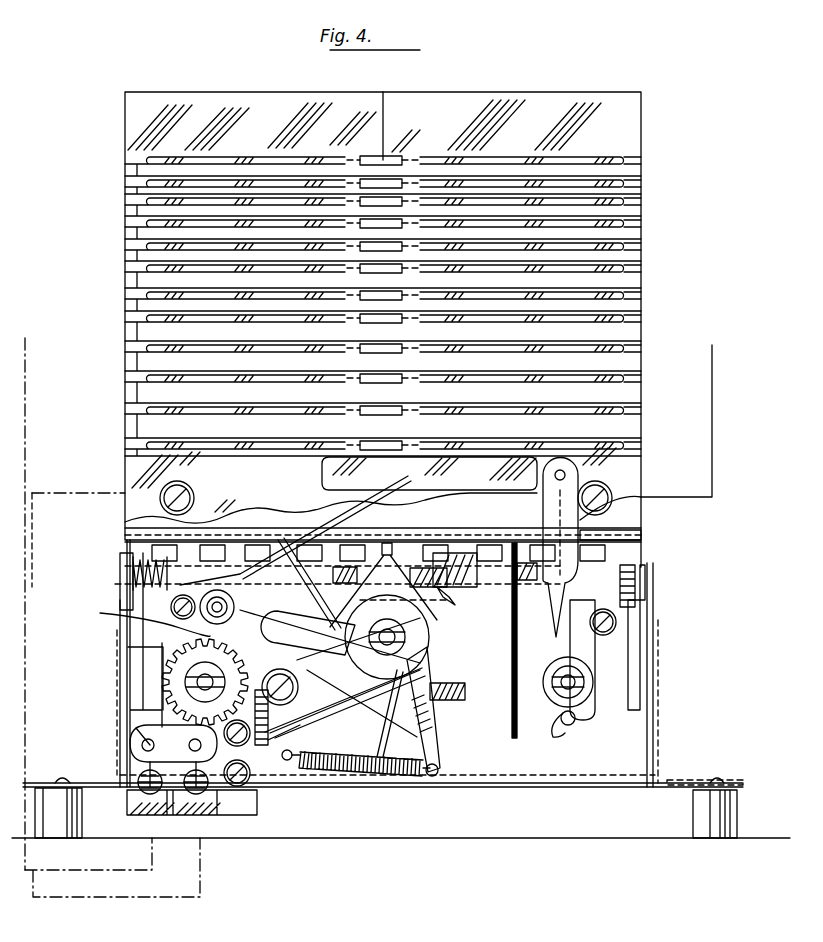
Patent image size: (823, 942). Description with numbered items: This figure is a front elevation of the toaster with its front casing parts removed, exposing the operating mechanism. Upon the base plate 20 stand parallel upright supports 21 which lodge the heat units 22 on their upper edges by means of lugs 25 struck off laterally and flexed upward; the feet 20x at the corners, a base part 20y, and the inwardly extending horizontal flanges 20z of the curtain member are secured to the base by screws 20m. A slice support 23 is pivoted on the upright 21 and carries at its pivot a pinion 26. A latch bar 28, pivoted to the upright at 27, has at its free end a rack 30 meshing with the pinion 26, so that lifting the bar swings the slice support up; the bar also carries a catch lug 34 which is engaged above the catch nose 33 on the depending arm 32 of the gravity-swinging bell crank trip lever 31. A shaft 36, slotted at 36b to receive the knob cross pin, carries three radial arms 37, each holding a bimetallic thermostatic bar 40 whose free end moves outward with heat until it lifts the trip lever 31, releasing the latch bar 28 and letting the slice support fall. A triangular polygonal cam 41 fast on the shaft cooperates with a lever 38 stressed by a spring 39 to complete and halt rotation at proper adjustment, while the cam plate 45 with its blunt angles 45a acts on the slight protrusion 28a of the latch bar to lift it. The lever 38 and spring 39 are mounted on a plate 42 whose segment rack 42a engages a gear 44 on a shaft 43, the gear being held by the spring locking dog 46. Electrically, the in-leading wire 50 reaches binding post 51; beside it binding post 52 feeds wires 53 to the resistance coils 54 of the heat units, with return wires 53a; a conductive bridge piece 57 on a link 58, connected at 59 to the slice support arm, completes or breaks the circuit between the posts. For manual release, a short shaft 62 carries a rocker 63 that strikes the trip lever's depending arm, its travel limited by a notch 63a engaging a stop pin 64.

The base plate 20 is at (333, 787).
The screws 20m is at (407, 770).
The feet 20x is at (60, 838).
The base foot block 20y is at (640, 793).
The inwardly extending horizontal flanges 20z is at (697, 768).
The upright support 21 is at (127, 603).
The heat unit 22 is at (642, 360).
The slice support 23 is at (150, 535).
The lugs 25 is at (437, 555).
The pinion 26 is at (637, 568).
The pivot 27 is at (220, 597).
The latch bar 28 is at (452, 578).
The slight protrusion 28a is at (398, 560).
The rack 30 is at (633, 600).
The bell crank trip lever 31 is at (322, 470).
The depending arm 32 is at (543, 515).
The catch nose 33 is at (565, 600).
The catch lug 34 is at (553, 587).
The shaft 36 is at (440, 697).
The slot 36b is at (400, 632).
The radial arms 37 is at (493, 590).
The lever 38 is at (343, 704).
The spring 39 is at (410, 773).
The thermostatic bar 40 is at (335, 513).
The polygonal cam 41 is at (442, 672).
The plate 42 is at (347, 678).
The segment rack 42a is at (270, 760).
The shaft 43 is at (207, 681).
The gear 44 is at (170, 678).
The cam plate 45 is at (309, 584).
The blunt angles 45a is at (458, 606).
The spring locking dog 46 is at (141, 620).
The in-leading wire 50 is at (25, 428).
The binding post 51 is at (150, 795).
The binding post 52 is at (196, 795).
The wires 53 is at (162, 897).
The return circuit wires 53a is at (712, 478).
The resistance coils 54 is at (127, 477).
The conductive bridge piece 57 is at (130, 752).
The link 58 is at (167, 650).
The connection 59 is at (133, 562).
The short shaft 62 is at (575, 682).
The short rocker 63 is at (572, 648).
The notch 63a is at (575, 733).
The stop pin 64 is at (575, 720).